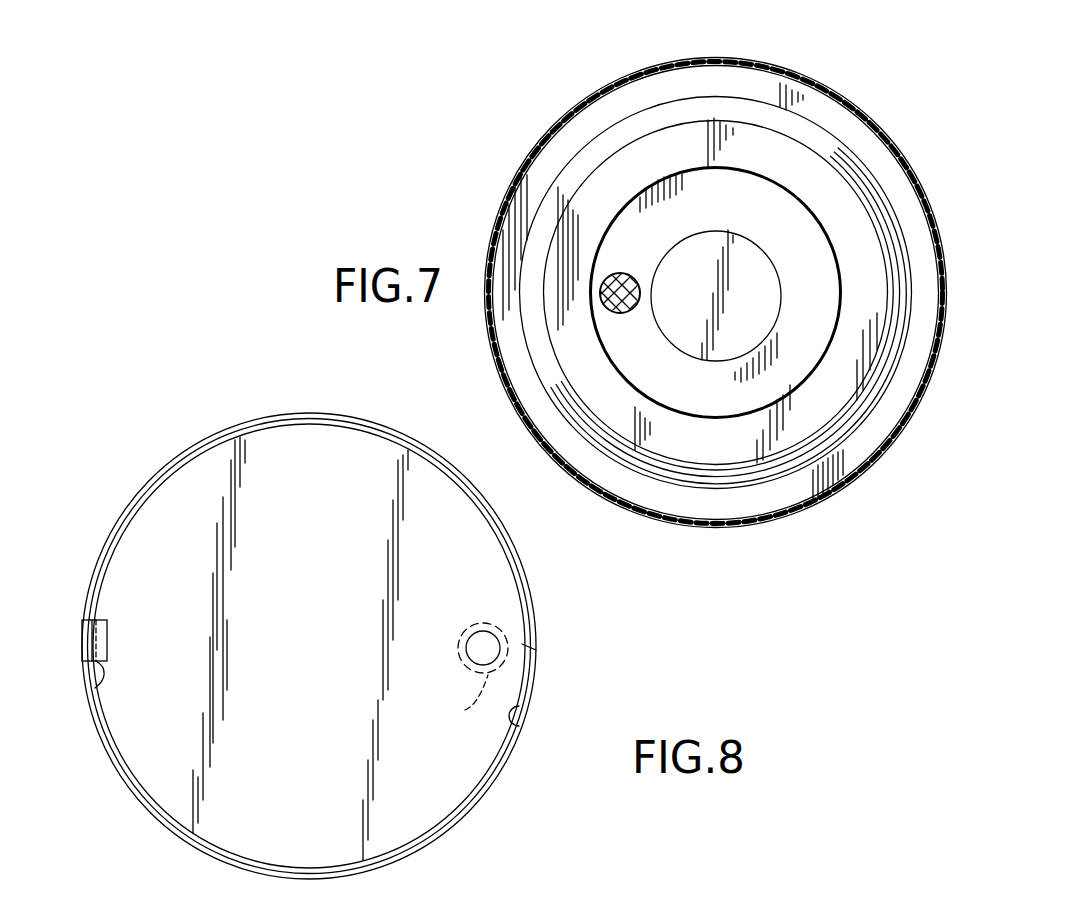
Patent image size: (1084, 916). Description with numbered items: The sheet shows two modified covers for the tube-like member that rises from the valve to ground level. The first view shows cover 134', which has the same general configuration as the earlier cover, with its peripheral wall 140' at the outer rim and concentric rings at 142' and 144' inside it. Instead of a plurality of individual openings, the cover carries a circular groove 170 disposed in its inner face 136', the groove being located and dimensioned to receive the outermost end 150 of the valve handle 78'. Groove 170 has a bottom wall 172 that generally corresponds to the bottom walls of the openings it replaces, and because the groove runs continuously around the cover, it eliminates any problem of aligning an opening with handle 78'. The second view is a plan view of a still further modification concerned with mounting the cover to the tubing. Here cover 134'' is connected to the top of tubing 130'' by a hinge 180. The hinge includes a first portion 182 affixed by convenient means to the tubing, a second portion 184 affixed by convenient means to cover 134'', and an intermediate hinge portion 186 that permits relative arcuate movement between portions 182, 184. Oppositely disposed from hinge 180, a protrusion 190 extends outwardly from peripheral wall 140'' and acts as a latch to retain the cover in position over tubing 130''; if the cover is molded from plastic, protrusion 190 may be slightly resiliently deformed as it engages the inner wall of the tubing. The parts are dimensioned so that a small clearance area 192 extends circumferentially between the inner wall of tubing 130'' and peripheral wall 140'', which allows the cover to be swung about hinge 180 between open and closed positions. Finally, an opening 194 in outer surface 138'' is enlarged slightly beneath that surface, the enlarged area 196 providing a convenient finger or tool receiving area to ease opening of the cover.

In FIG. 7, the cover 134' is at (677, 293).
In FIG. 7, the peripheral wall 140' is at (660, 291).
In FIG. 7, the annular shoulder 142' is at (716, 273).
In FIG. 7, the annular groove wall 144' is at (716, 246).
In FIG. 7, the bottom wall 172 is at (627, 360).
In FIG. 7, the circular groove 170 is at (646, 382).
In FIG. 7, the inner face 136' is at (716, 293).
In FIG. 7, the outermost end 150 is at (630, 299).
In FIG. 7, the handle 78' is at (628, 270).
In FIG. 8, the tubing 130'' is at (309, 633).
In FIG. 8, the clearance area 192 is at (150, 488).
In FIG. 8, the cover 134'' is at (373, 646).
In FIG. 8, the outer surface 138'' is at (385, 648).
In FIG. 8, the hinge 180 is at (117, 613).
In FIG. 8, the first portion 182 is at (88, 628).
In FIG. 8, the second portion 184 is at (107, 647).
In FIG. 8, the intermediate hinge portion 186 is at (95, 688).
In FIG. 8, the opening 194 is at (485, 640).
In FIG. 8, the enlarged area 196 is at (455, 699).
In FIG. 8, the protrusion 190 is at (527, 647).
In FIG. 8, the peripheral wall 140'' is at (580, 703).